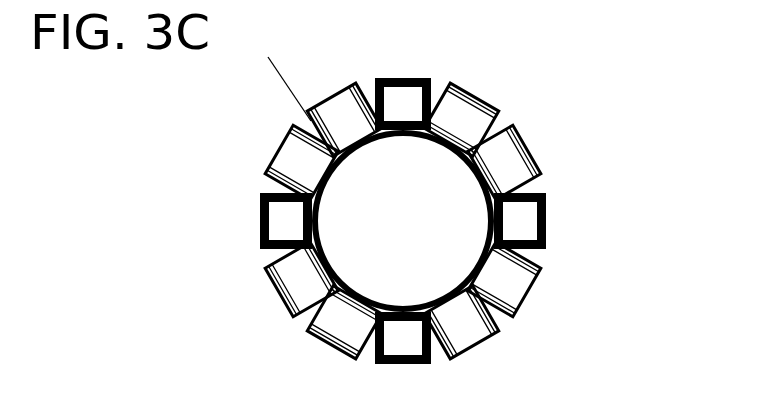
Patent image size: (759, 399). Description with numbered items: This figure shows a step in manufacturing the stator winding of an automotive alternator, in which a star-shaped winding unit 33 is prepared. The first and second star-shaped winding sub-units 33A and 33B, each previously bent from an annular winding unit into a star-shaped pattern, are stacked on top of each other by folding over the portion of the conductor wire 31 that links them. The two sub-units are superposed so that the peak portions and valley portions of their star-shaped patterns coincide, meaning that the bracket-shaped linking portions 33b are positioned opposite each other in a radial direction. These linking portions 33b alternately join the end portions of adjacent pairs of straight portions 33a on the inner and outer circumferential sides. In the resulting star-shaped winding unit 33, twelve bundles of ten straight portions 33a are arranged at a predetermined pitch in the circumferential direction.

The conductor wire 31 is at (262, 177).
The star-shaped winding unit 33 is at (627, 127).
The first star-shaped winding sub-unit 33A is at (541, 153).
The second star-shaped winding sub-unit 33B is at (557, 208).
The straight portions 33a is at (463, 134).
The linking portions 33b is at (476, 181).